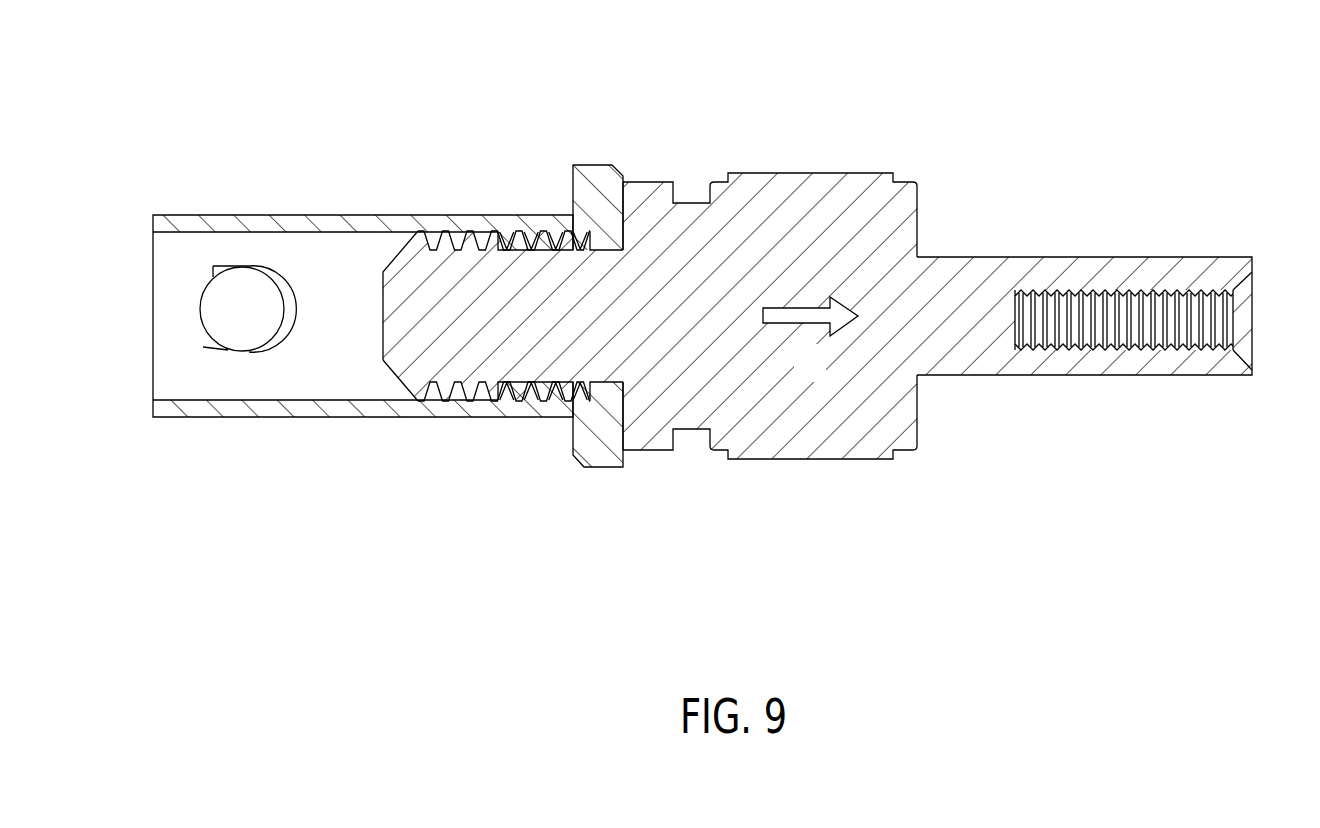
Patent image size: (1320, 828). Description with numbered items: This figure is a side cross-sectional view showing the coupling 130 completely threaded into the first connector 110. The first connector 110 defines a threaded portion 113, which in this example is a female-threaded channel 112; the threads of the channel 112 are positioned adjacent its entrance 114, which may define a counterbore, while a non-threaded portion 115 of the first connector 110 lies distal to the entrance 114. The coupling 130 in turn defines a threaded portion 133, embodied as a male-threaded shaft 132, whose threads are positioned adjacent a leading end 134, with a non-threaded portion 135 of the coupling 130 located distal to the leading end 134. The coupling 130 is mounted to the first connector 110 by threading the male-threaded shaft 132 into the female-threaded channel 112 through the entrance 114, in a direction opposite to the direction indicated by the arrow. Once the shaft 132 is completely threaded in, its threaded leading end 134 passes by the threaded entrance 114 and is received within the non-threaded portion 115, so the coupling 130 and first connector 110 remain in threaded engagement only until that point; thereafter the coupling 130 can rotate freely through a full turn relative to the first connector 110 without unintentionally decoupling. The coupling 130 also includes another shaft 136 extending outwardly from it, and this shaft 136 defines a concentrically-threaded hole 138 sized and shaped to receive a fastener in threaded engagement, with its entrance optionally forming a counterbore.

The first connector 110 is at (333, 178).
The female-threaded channel 112 is at (530, 393).
The threaded portion 113 is at (575, 213).
The entrance 114 is at (623, 427).
The non-threaded portion 115 is at (495, 468).
The coupling 130 is at (823, 145).
The male-threaded shaft 132 is at (450, 260).
The threaded portion 133 is at (493, 417).
The leading end 134 is at (397, 316).
The non-threaded portion 135 is at (623, 195).
The shaft 136 is at (990, 362).
The concentrically-threaded hole 138 is at (1090, 294).